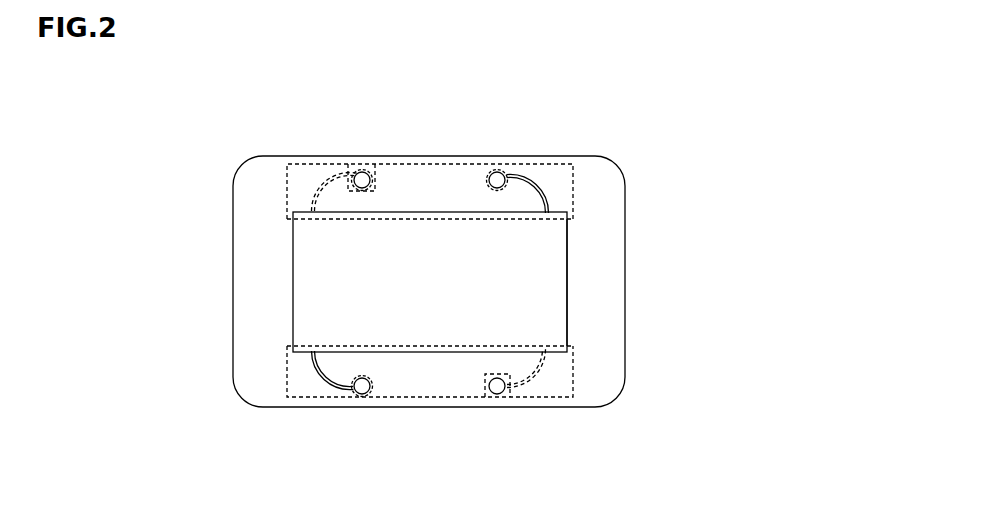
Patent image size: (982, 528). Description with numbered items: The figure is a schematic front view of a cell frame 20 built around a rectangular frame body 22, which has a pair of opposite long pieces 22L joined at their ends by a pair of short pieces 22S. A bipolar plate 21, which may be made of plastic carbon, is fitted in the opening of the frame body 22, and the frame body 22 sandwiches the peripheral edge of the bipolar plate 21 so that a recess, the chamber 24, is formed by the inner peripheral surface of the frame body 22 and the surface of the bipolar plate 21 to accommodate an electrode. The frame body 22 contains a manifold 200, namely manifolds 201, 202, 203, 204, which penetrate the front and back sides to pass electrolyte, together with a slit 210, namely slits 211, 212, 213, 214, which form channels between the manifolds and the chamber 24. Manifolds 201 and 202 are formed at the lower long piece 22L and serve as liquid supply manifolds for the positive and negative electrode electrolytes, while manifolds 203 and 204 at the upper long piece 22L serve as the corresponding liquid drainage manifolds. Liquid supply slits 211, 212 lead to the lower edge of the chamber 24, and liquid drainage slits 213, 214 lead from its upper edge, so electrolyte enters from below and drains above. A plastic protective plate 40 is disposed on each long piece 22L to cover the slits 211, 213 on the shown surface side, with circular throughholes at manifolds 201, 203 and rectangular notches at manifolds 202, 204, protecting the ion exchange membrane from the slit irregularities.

The cell frame 20 is at (652, 202).
The bipolar plate 21 is at (322, 280).
The frame body 22 is at (232, 210).
The long piece 22L is at (420, 157).
The short piece 22S is at (240, 305).
The chamber 24 is at (565, 283).
The protective plate 40 is at (458, 168).
The manifold 200 is at (550, 284).
The manifold 201 is at (352, 395).
The manifold 202 is at (506, 395).
The manifold 203 is at (508, 172).
The manifold 204 is at (367, 172).
The slit 210 is at (481, 293).
The slit 211 is at (318, 378).
The slit 212 is at (552, 362).
The slit 213 is at (546, 192).
The slit 214 is at (313, 192).